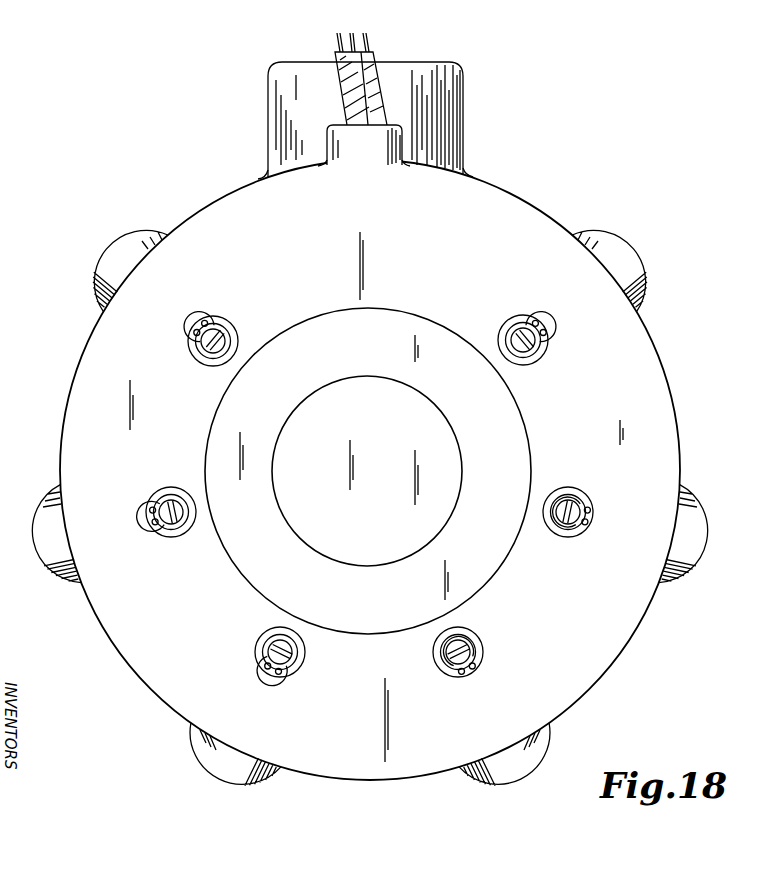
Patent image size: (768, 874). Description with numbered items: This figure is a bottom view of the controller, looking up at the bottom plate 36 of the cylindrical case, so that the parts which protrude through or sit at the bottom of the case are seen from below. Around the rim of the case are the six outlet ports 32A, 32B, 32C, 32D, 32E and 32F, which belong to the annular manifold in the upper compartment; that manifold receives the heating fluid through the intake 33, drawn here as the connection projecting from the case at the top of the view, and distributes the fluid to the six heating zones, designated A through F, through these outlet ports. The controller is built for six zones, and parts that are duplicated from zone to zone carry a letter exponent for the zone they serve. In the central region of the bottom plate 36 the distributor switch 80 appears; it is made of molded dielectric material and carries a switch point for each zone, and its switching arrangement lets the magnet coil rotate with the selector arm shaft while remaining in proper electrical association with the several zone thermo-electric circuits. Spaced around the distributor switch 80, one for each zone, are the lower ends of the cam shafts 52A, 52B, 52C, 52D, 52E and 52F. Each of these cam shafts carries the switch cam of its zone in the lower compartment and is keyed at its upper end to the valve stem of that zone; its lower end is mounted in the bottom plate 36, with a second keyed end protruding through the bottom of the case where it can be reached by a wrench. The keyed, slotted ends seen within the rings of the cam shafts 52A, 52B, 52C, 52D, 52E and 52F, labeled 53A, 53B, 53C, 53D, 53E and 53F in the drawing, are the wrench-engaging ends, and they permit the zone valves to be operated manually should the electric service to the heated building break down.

The intake 33 is at (463, 133).
The bottom plate 36 is at (663, 402).
The distributor switch 80 is at (410, 428).
The outlet port 32A is at (640, 262).
The outlet port 32B is at (665, 585).
The outlet port 32C is at (468, 780).
The outlet port 32D is at (222, 775).
The outlet port 32E is at (45, 490).
The outlet port 32F is at (135, 232).
The cam shaft 52A is at (521, 330).
The cam shaft 52B is at (566, 498).
The cam shaft 52C is at (470, 641).
The cam shaft 52D is at (280, 645).
The cam shaft 52E is at (181, 527).
The cam shaft 52F is at (230, 338).
The terminal screw 53A is at (524, 345).
The terminal screw 53B is at (568, 515).
The terminal screw 53C is at (447, 657).
The terminal screw 53D is at (270, 656).
The terminal screw 53E is at (172, 512).
The terminal screw 53F is at (213, 341).